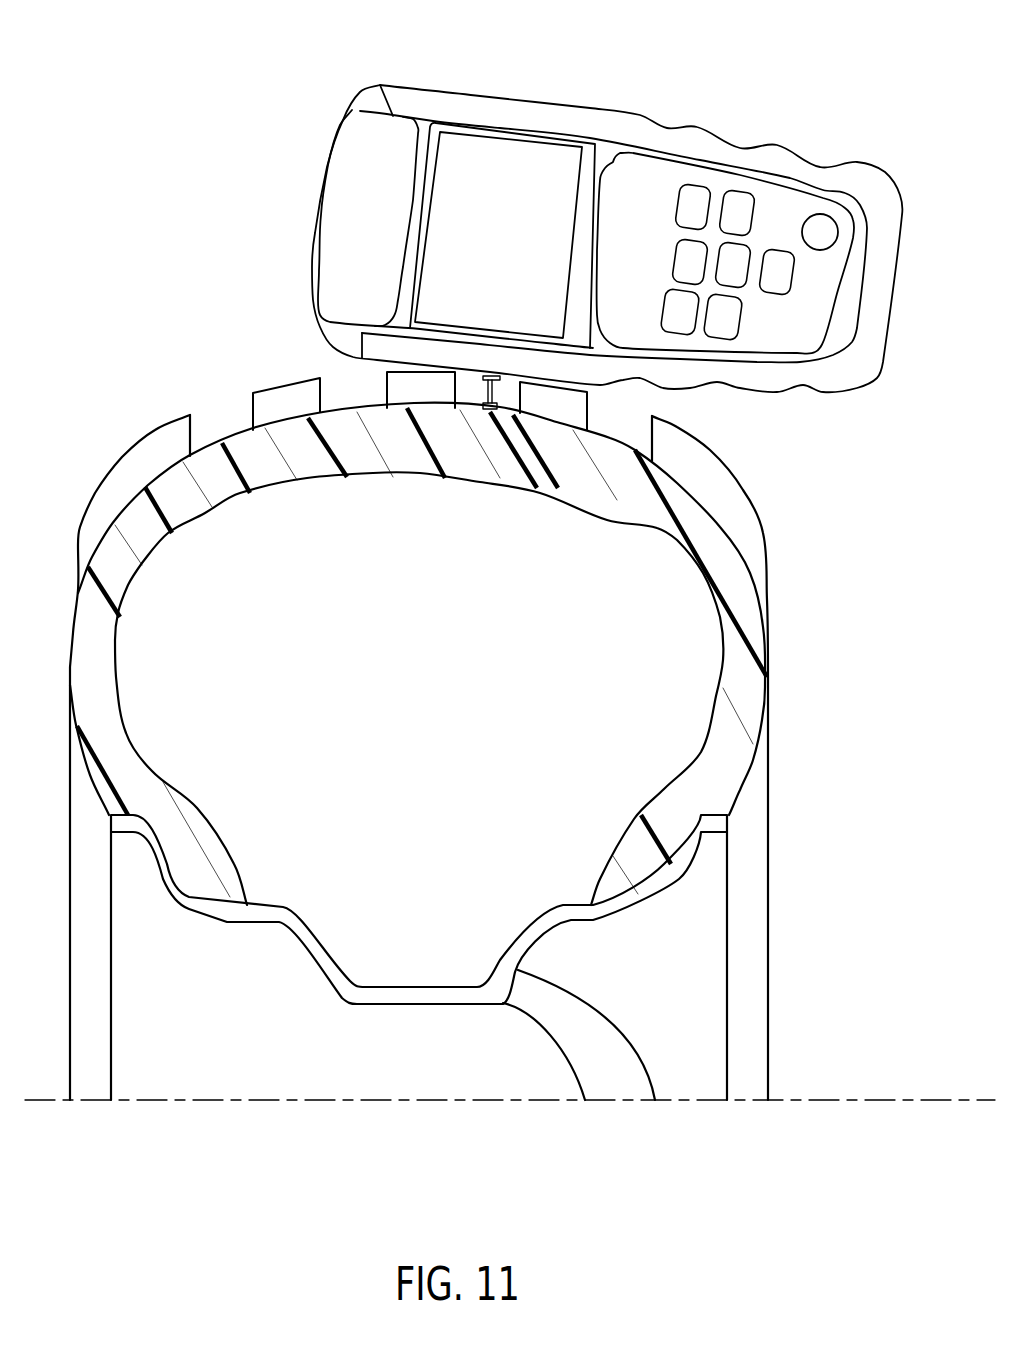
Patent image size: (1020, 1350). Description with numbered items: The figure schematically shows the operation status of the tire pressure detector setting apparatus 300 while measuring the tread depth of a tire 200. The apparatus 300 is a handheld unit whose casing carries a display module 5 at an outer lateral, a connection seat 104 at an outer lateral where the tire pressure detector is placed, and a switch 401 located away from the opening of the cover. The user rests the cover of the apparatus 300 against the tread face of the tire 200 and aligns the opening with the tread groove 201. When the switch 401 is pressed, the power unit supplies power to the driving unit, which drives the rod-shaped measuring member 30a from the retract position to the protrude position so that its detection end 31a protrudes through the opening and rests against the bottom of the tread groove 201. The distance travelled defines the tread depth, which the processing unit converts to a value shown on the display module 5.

The tire pressure detector setting apparatus 300 is at (440, 85).
The display module 5 is at (513, 160).
The switch 401 is at (820, 228).
The connection seat 104 is at (357, 163).
The tread groove 201 is at (460, 397).
The tire 200 is at (102, 452).
The measuring member 30a is at (507, 400).
The detection end 31a is at (605, 528).